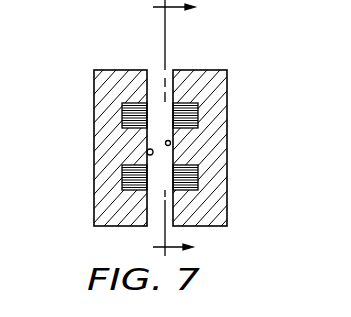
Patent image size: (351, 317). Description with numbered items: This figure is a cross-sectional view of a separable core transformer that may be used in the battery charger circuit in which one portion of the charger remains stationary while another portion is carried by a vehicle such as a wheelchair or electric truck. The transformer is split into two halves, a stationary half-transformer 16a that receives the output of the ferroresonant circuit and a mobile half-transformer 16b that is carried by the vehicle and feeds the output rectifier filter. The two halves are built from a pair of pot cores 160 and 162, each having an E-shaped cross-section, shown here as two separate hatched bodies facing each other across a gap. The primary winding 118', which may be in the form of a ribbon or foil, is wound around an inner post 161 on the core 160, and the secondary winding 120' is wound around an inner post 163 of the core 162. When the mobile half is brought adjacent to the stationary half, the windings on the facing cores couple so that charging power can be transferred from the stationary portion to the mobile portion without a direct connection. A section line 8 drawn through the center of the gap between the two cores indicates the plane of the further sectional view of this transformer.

The section line 8- 8 is at (182, 128).
The half-transformer 16a is at (118, 70).
The half-transformer 16b is at (203, 70).
The pot core 160 is at (122, 150).
The inner post 161 is at (146, 153).
The pot core 162 is at (190, 150).
The inner post 163 is at (170, 143).
The primary winding 118' is at (98, 212).
The secondary winding 120' is at (237, 167).